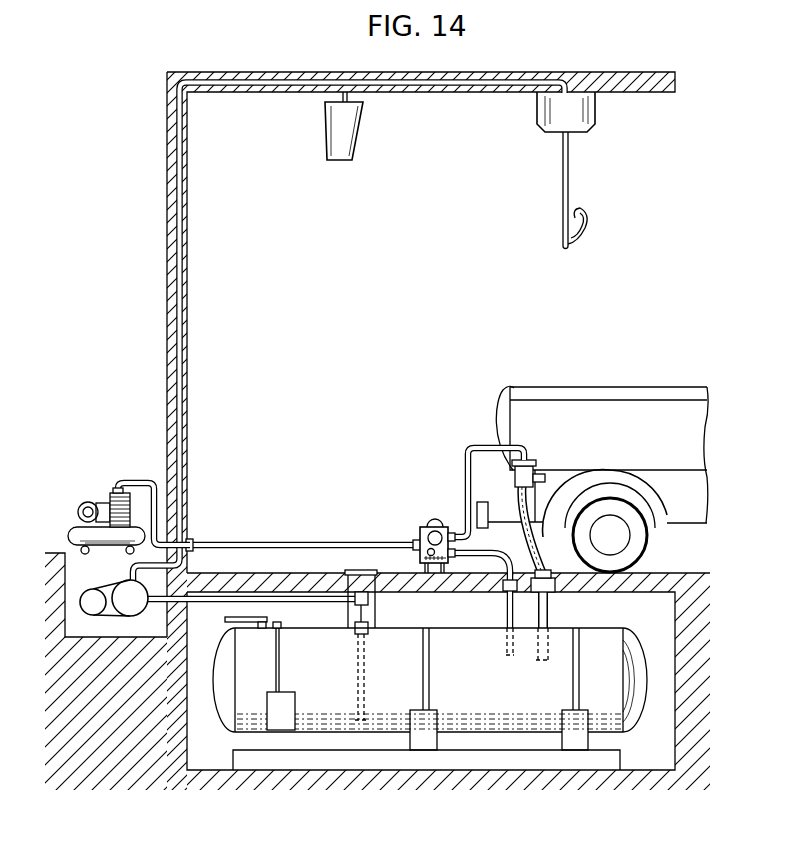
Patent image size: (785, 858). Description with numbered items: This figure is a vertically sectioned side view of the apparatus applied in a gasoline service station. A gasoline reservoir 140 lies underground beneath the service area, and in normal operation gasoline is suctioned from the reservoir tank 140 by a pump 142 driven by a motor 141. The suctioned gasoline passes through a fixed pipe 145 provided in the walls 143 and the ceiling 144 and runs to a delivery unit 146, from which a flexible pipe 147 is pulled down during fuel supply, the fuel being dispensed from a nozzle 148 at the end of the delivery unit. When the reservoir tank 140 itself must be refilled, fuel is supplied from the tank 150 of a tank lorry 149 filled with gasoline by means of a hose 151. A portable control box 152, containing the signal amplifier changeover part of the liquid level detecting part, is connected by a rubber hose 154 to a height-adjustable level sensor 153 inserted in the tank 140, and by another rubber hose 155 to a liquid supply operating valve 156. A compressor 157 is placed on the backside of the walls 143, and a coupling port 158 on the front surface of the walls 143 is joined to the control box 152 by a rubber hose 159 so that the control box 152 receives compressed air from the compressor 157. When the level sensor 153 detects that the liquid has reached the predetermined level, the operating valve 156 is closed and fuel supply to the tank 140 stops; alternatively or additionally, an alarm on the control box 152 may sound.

The gasoline reservoir 140 is at (604, 640).
The motor 141 is at (90, 608).
The pump 142 is at (128, 588).
The walls 143 is at (167, 326).
The ceiling 144 is at (430, 93).
The fixed pipe 145 is at (182, 190).
The delivery unit 146 is at (585, 113).
The flexible pipe 147 is at (568, 162).
The nozzle 148 is at (588, 217).
The tank lorry 149 is at (601, 381).
The tank 150 is at (505, 410).
The hose 151 is at (562, 578).
The control box 152 is at (420, 529).
The level sensor 153 is at (500, 622).
The rubber hose 154 is at (477, 590).
The rubber hose 155 is at (466, 470).
The liquid supply operating valve 156 is at (533, 462).
The compressor 157 is at (115, 494).
The coupling port 158 is at (192, 539).
The rubber hose 159 is at (262, 543).